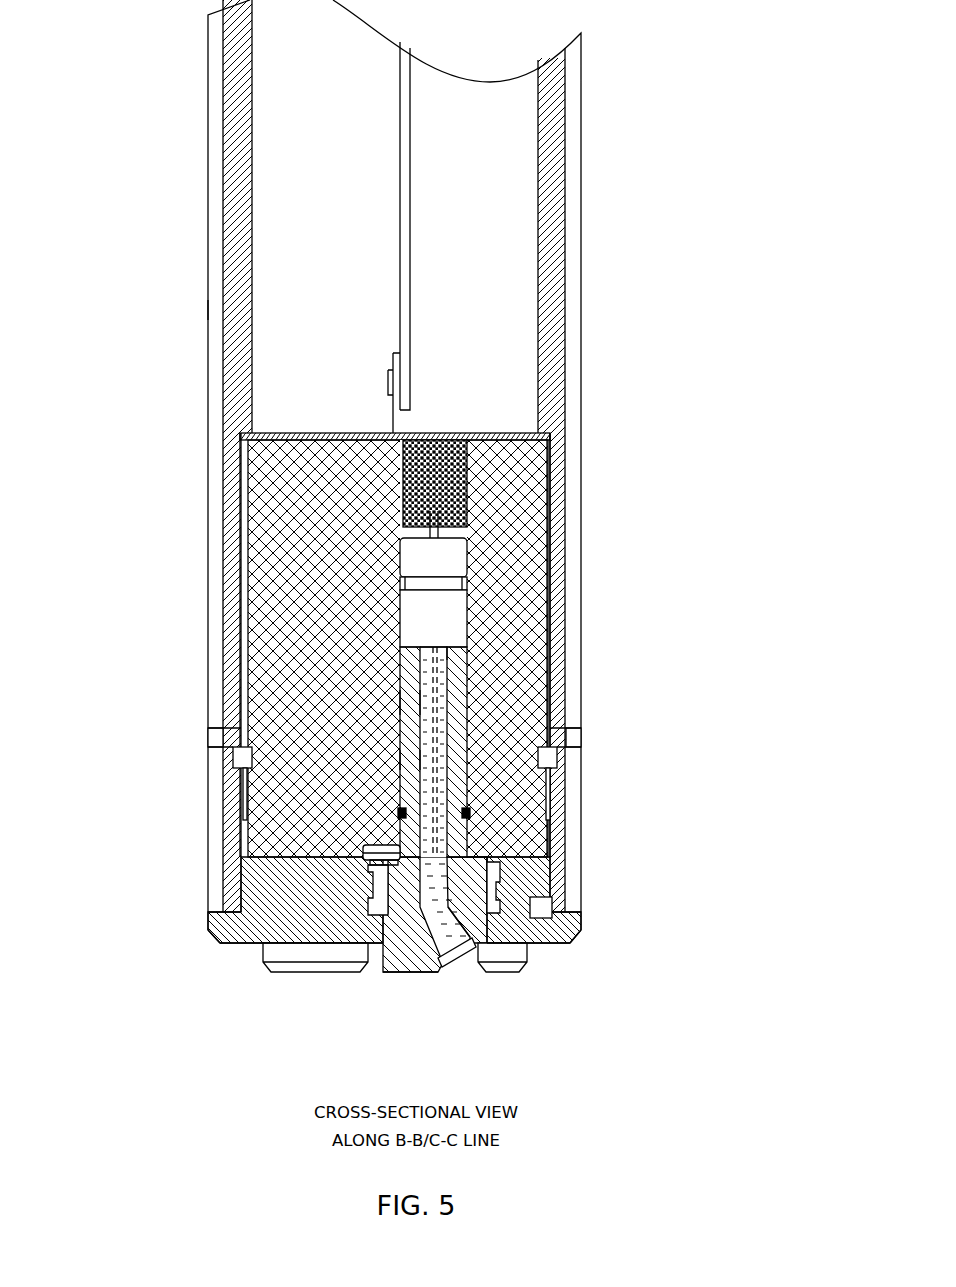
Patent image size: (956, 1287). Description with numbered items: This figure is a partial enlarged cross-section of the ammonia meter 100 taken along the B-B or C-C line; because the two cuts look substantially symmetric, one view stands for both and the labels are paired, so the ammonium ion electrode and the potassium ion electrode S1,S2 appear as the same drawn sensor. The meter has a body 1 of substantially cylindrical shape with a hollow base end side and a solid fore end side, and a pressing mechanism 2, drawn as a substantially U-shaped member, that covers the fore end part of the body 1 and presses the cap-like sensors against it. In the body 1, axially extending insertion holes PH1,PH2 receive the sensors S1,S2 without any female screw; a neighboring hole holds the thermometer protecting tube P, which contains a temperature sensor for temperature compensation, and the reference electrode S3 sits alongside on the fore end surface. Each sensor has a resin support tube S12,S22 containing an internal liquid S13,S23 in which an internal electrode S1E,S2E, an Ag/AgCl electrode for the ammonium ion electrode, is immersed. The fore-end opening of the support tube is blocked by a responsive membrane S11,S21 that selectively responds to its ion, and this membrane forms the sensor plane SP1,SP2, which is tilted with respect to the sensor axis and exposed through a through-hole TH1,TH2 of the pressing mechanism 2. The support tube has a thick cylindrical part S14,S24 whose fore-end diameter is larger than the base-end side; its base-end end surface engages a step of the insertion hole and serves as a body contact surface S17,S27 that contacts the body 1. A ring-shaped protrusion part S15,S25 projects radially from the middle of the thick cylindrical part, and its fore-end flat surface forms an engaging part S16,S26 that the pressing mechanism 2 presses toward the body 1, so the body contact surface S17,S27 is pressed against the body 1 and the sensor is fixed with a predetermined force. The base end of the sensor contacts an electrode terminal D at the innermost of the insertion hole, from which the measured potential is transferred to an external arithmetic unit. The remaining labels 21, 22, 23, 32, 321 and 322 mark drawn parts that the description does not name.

The ammonia meter 100 is at (75, 235).
The body 1 is at (583, 473).
The pressing mechanism 2 is at (243, 955).
The base 21 is at (352, 945).
The sealing block 22 is at (208, 802).
The flange 23 is at (235, 775).
The sensor element assembly 32 is at (252, 849).
The sensor element 321 is at (378, 852).
The sensor holder 322 is at (378, 840).
The electrode terminal D is at (440, 433).
The thermometer protecting tube P is at (525, 958).
The reference electrode S3 is at (293, 975).
The ammonium ion electrode and potassium ion electrode S1,S2 is at (422, 975).
The internal electrodes S1E,S2E is at (470, 812).
The responsive membranes S11,S21 is at (463, 957).
The support tubes S12,S22 is at (402, 700).
The internal liquids S13,S23 is at (425, 658).
The thick cylindrical parts S14,S24 is at (490, 882).
The protrusion parts S15,S25 is at (380, 905).
The engaging parts S16,S26 is at (403, 950).
The body contact surfaces S17,S27 is at (487, 840).
The sensor planes SP1,SP2 is at (440, 967).
The insertion holes PH1,PH2 is at (397, 757).
The through-holes TH1,TH2 is at (257, 815).